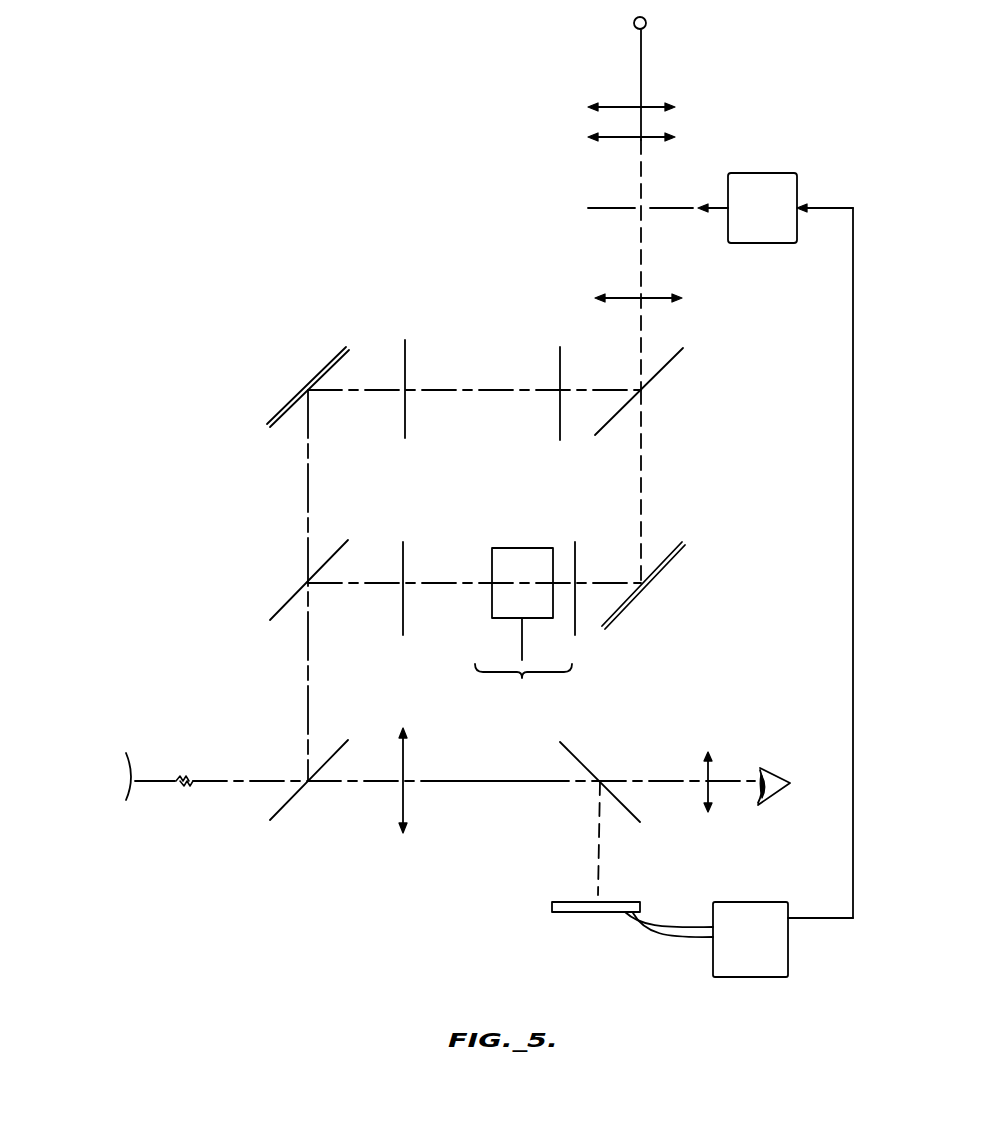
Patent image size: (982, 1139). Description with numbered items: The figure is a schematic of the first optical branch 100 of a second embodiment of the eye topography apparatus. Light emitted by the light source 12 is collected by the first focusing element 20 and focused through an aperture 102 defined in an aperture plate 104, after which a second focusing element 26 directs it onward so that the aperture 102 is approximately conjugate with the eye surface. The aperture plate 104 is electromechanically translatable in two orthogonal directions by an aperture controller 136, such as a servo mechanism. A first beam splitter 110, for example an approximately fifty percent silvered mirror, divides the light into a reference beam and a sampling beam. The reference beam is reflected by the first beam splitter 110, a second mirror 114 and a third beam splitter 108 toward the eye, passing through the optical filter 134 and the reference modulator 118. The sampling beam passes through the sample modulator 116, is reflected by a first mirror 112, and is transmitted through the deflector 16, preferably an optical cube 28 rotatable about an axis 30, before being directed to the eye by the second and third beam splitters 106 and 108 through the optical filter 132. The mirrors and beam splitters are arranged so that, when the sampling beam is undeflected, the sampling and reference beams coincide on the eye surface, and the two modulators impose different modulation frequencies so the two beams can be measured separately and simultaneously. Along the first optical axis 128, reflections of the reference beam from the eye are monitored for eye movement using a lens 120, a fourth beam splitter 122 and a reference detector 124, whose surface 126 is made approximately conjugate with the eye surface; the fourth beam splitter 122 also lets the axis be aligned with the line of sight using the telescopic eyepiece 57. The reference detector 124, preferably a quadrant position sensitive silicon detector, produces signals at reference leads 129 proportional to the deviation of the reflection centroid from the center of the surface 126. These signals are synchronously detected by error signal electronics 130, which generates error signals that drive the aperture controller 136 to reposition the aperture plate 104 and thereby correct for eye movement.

The light source 12 is at (647, 19).
The deflector 16 is at (523, 687).
The first focusing element 20 is at (678, 106).
The second focusing element 26 is at (653, 297).
The optical cube 28 is at (503, 620).
The axis 30 is at (525, 637).
The telescopic eyepiece 57 is at (710, 772).
The first optical branch 100 is at (327, 883).
The aperture 102 is at (646, 207).
The aperture plate 104 is at (602, 208).
The second beam splitter 106 is at (290, 598).
The third beam splitter 108 is at (289, 805).
The first beam splitter 110 is at (668, 362).
The first mirror 112 is at (668, 561).
The second mirror 114 is at (288, 406).
The sample modulator 116 is at (576, 546).
The reference modulator 118 is at (560, 356).
The lens 120 is at (405, 757).
The fourth beam splitter 122 is at (581, 757).
The reference detector 124 is at (643, 908).
The reference detector surface 126 is at (575, 902).
The first optical axis 128 is at (467, 781).
The reference leads 129 is at (678, 939).
The error signal electronics 130 is at (789, 940).
The optical filter 132 is at (404, 557).
The optical filter 134 is at (406, 357).
The aperture controller 136 is at (783, 174).